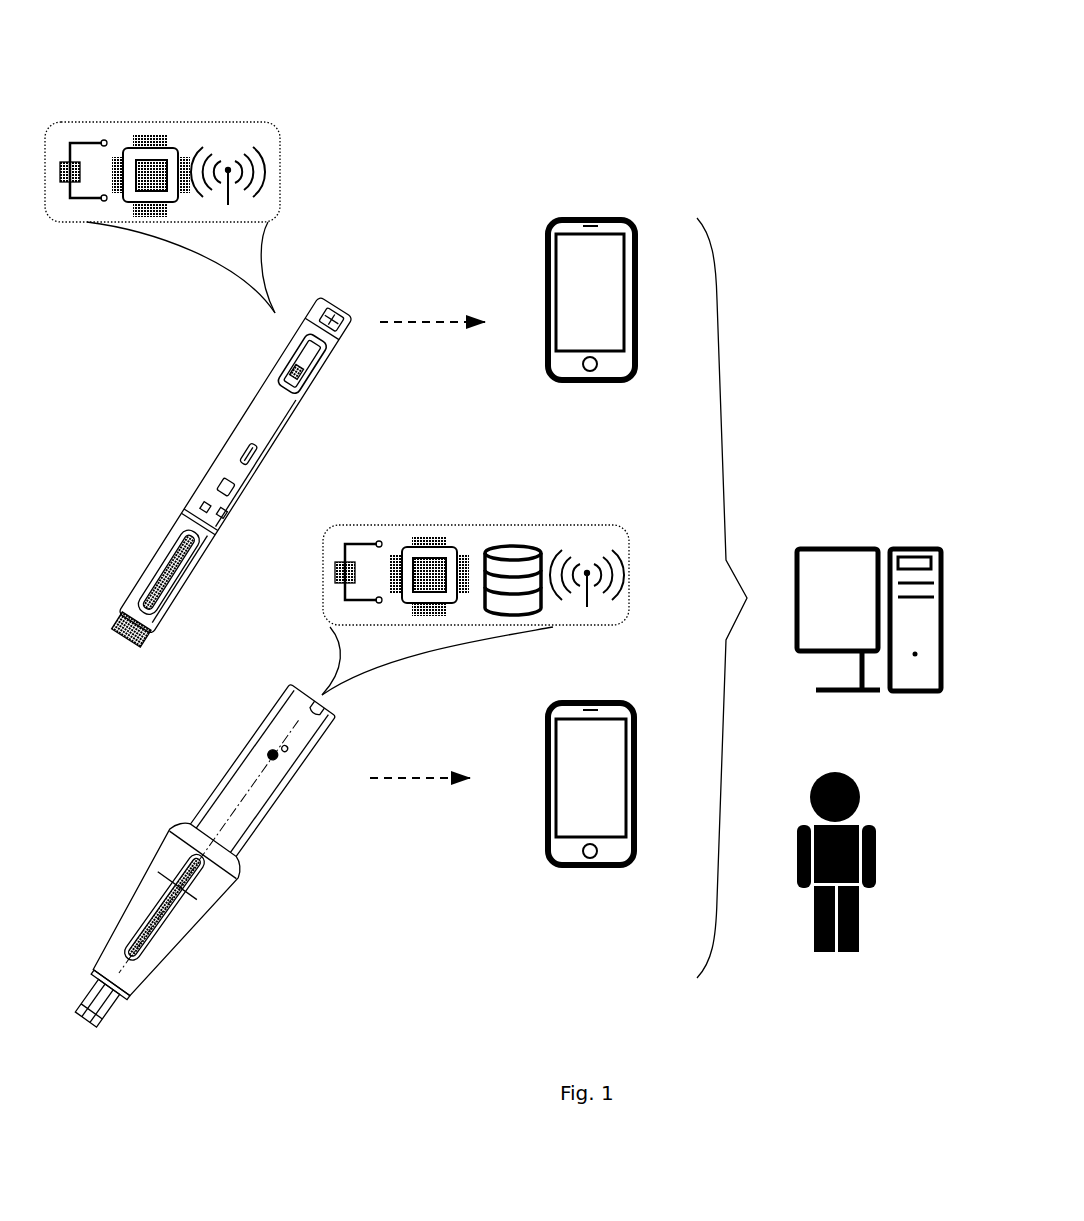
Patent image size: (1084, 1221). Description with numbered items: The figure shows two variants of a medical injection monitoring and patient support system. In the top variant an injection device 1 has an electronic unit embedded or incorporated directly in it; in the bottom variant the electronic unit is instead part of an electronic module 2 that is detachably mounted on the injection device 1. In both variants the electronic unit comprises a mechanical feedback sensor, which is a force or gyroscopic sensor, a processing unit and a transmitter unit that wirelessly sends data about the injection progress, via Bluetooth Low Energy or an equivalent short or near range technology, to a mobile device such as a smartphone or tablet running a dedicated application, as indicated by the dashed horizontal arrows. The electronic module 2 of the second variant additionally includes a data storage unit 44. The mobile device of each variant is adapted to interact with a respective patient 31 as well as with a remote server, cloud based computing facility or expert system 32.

The injection device 1 is at (165, 443).
The electronic module 2 is at (170, 787).
The patient 31 is at (895, 962).
The expert system 32 is at (927, 700).
The data storage unit 44 is at (512, 535).